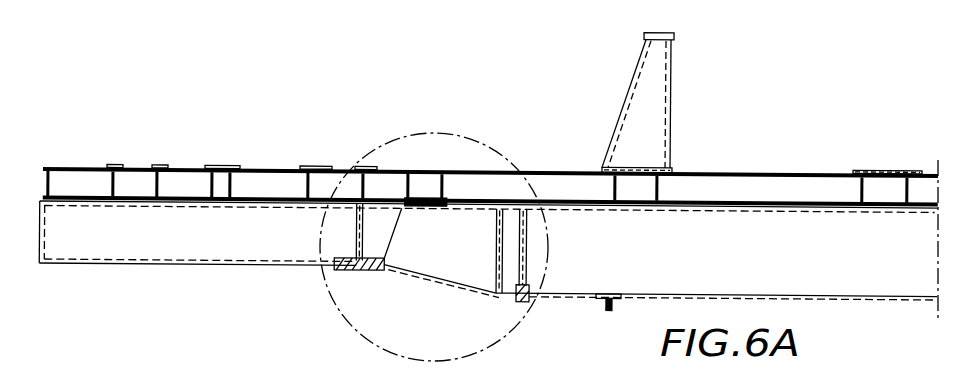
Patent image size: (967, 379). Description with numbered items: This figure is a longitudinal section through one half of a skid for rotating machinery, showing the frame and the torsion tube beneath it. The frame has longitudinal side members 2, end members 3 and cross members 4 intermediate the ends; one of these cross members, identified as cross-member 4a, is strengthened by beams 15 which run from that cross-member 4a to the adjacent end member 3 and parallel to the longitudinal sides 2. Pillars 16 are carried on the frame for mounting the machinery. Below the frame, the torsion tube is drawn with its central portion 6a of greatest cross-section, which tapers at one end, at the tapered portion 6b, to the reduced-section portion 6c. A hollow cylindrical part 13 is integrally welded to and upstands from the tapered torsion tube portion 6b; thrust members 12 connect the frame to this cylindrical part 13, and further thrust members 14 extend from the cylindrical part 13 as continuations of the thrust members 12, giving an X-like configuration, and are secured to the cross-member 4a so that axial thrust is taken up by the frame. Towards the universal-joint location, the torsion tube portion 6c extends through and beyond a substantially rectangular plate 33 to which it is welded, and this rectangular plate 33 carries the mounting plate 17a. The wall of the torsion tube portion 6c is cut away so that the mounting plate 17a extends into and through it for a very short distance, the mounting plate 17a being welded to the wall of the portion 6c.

The longitudinal side member 2 is at (733, 177).
The end member 3 is at (55, 182).
The cross member 4 is at (232, 183).
The cross-member 4a is at (320, 181).
The central portion of torsion tube 6a is at (810, 265).
The tapered portion of torsion tube 6b is at (458, 251).
The reduced-section portion of torsion tube 6c is at (188, 243).
The thrust member 12 is at (548, 186).
The hollow cylindrical part 13 is at (450, 179).
The further thrust member 14 is at (388, 180).
The beam 15 is at (188, 181).
The pillar 16 is at (657, 98).
The mounting plate 17a is at (360, 268).
The rectangular plate 33 is at (353, 221).